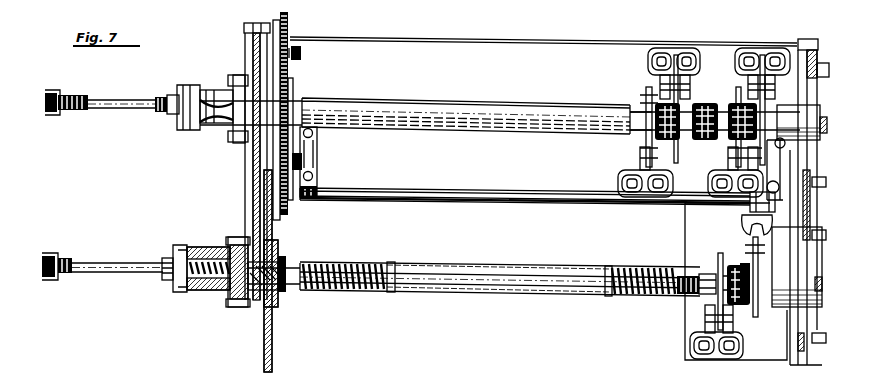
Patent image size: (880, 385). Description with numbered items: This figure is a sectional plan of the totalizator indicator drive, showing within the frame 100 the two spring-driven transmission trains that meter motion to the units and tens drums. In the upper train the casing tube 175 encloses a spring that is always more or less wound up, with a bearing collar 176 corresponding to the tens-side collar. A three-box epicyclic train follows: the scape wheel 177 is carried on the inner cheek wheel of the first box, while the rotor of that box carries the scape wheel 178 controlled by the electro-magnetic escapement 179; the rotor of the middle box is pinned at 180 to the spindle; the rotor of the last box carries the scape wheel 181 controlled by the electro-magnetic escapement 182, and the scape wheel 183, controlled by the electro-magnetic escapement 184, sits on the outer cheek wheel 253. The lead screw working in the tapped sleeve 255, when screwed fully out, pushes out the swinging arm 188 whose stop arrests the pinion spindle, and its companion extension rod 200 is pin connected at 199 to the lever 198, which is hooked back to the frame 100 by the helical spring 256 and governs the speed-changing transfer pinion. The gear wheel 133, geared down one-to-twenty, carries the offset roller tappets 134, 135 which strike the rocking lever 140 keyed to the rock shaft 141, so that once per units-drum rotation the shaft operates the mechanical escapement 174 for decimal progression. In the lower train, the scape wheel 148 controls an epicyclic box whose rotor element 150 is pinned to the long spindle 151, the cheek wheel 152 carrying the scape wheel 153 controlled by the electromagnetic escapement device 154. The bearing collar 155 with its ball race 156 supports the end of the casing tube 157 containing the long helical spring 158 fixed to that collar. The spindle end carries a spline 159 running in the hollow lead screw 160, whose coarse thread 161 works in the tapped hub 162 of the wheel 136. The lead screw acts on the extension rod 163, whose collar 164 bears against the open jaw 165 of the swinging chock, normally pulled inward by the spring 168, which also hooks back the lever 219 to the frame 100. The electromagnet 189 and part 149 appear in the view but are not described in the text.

The frame 100 is at (244, 49).
The gear wheel 133 is at (292, 24).
The roller tappet 134 is at (302, 54).
The tapped sleeve 255 is at (293, 98).
The casing tube 175 is at (455, 99).
The roller tappet 135 is at (300, 163).
The rocking lever 140 is at (315, 180).
The rock shaft 141 is at (550, 201).
The mechanical escapement 174 is at (770, 221).
The scape wheel 148 is at (760, 257).
The pin connection 199 is at (50, 112).
The lever 198 is at (68, 96).
The extension rod 200 is at (120, 111).
The helical spring 256 is at (92, 102).
The swinging arm 188 is at (171, 94).
The electro-magnetic escapement 179 is at (680, 53).
The scape wheel 178 is at (676, 153).
The pin connection 180 is at (705, 105).
The scape wheel 177 is at (648, 88).
The bearing collar 176 is at (640, 115).
The electro-magnetic escapement 184 is at (763, 53).
The scape wheel 181 is at (737, 90).
The scape wheel 183 is at (762, 105).
The outer cheek wheel 253 is at (762, 123).
The electromagnet 189 is at (620, 178).
The electro-magnetic escapement 182 is at (718, 178).
The lever 219 is at (47, 256).
The spring 168 is at (66, 259).
The extension rod 163 is at (112, 273).
The open jaw 165 is at (163, 283).
The collar 164 is at (173, 252).
The coarse thread 161 is at (209, 291).
The hollow lead screw 160 is at (285, 288).
The wheel 136 is at (275, 340).
The tapped hub 162 is at (284, 262).
The spline 159 is at (338, 292).
The casing tube 157 is at (487, 298).
The long spindle 151 is at (423, 291).
The long helical spring 158 is at (386, 262).
The bearing collar 155 is at (687, 298).
The ball race 156 is at (697, 301).
The scape wheel 153 is at (719, 266).
The cheek wheel 152 is at (730, 262).
The armature rod 149 is at (751, 313).
The rotor element 150 is at (740, 304).
The electromagnetic escapement device 154 is at (713, 358).